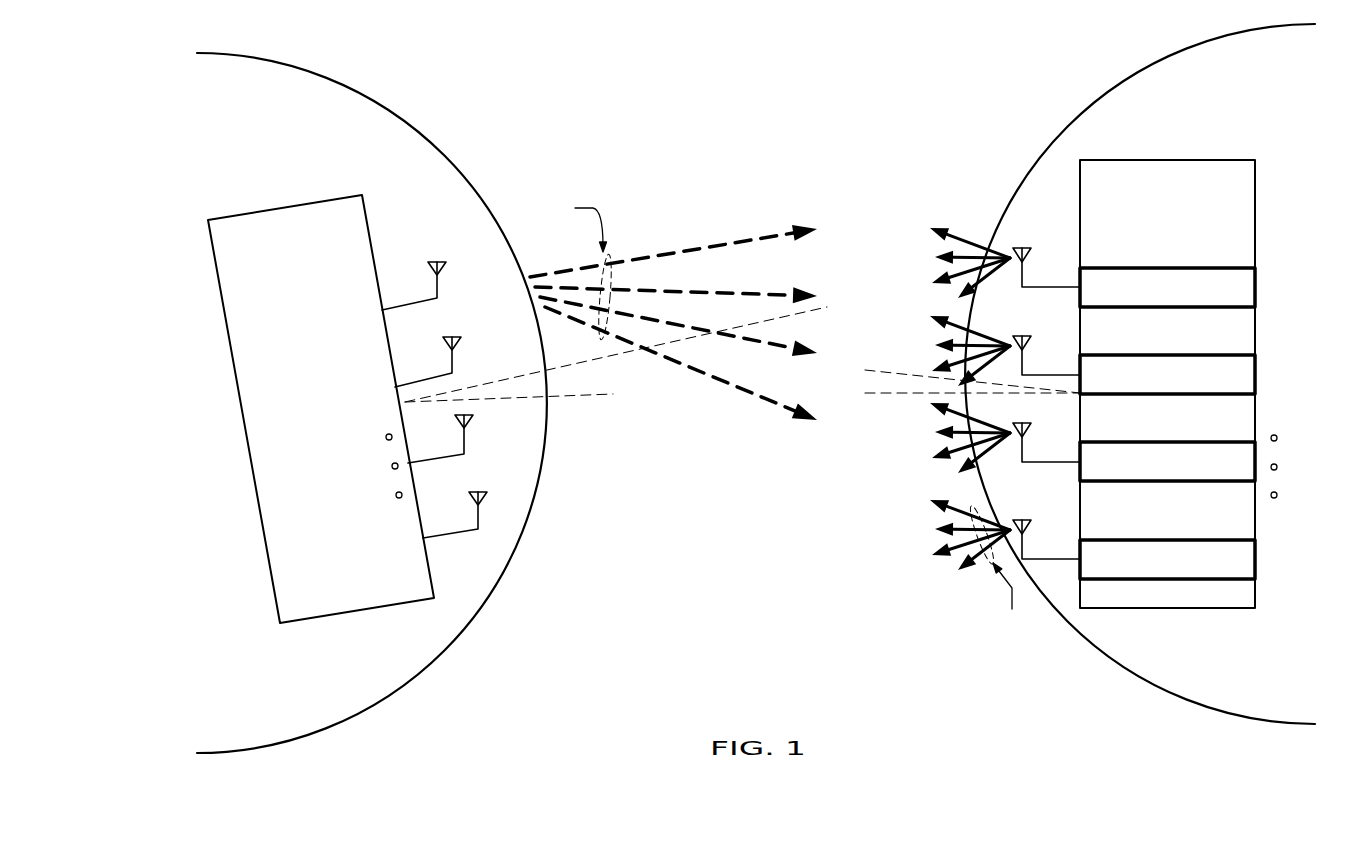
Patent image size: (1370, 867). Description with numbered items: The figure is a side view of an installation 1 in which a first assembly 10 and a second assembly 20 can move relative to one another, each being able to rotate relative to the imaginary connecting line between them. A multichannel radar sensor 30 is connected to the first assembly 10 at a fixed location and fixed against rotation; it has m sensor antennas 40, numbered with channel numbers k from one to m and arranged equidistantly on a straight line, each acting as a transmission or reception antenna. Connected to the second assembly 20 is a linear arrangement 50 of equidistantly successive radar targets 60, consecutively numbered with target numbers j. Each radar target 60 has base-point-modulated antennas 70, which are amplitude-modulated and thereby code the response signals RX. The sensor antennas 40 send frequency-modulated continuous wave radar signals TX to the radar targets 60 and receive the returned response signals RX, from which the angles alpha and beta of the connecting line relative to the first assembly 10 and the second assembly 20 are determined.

The installation 1 is at (500, 37).
The first assembly 10 is at (241, 170).
The second assembly 20 is at (1241, 132).
The multichannel radar sensor 30 is at (327, 427).
The sensor antennas 40 is at (440, 287).
The linear arrangement of radar targets 50 is at (1133, 153).
The radar targets 60 is at (1148, 484).
The base-point-modulated antennas 70 is at (1052, 557).